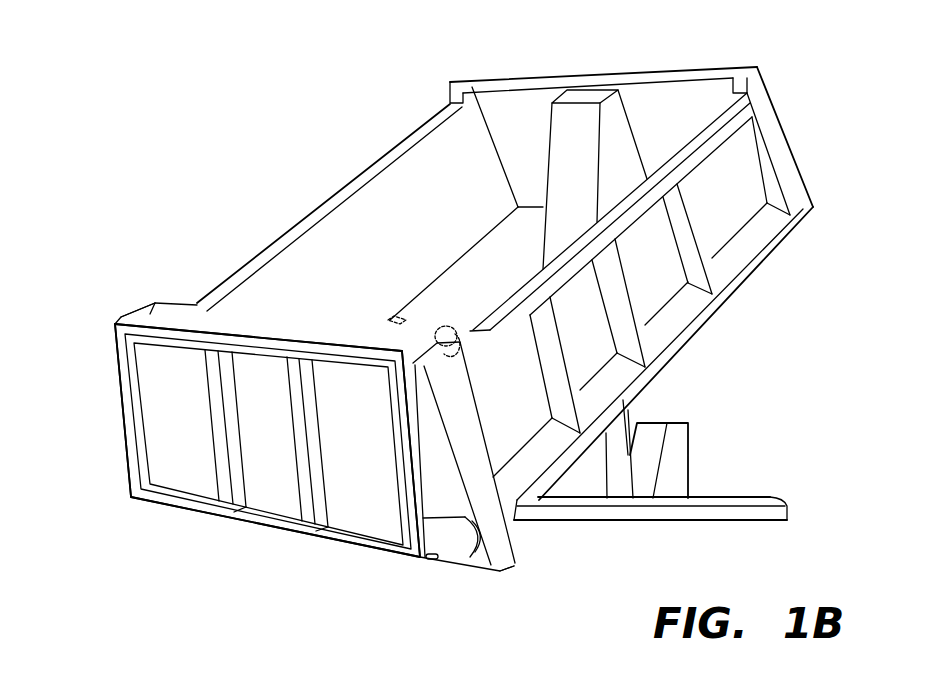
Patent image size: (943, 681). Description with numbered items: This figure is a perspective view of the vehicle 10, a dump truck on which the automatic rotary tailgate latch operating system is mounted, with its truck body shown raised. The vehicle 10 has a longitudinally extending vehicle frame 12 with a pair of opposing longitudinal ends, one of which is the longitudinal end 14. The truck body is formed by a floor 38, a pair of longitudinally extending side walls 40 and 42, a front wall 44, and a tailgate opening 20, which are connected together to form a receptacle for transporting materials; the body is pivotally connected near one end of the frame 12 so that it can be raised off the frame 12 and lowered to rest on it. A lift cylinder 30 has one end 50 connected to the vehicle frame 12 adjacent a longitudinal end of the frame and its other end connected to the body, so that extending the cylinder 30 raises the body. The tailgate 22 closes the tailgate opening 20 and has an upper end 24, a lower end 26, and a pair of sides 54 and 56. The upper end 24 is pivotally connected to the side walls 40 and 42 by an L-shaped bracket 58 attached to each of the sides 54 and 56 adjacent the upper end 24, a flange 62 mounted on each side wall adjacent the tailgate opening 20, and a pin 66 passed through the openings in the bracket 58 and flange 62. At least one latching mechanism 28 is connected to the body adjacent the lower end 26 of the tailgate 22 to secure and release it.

The vehicle 10 is at (138, 222).
The vehicle frame 12 is at (580, 505).
The longitudinal end 14 is at (758, 510).
The tailgate opening 20 is at (438, 485).
The tailgate 22 is at (170, 420).
The upper end 24 is at (212, 328).
The lower end 26 is at (203, 510).
The latching mechanism 28 is at (516, 568).
The lift cylinder 30 is at (615, 433).
The floor 38 is at (527, 252).
The side wall 40 is at (723, 222).
The side wall 42 is at (362, 212).
The front wall 44 is at (520, 100).
The end of lift cylinder 50 is at (623, 488).
The side of tailgate 54 is at (413, 477).
The side of tailgate 56 is at (128, 384).
The L-shaped bracket 58 is at (130, 320).
The flange 62 is at (476, 333).
The pin 66 is at (450, 323).